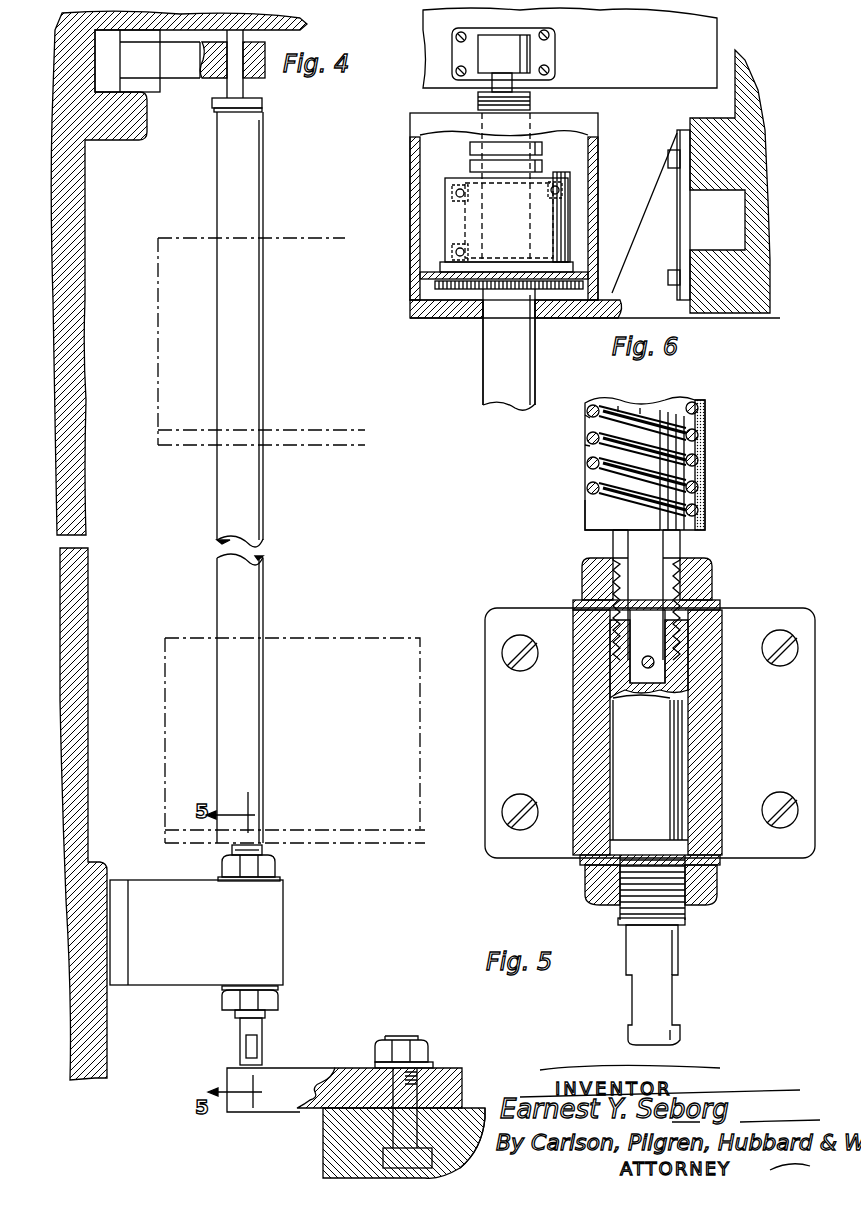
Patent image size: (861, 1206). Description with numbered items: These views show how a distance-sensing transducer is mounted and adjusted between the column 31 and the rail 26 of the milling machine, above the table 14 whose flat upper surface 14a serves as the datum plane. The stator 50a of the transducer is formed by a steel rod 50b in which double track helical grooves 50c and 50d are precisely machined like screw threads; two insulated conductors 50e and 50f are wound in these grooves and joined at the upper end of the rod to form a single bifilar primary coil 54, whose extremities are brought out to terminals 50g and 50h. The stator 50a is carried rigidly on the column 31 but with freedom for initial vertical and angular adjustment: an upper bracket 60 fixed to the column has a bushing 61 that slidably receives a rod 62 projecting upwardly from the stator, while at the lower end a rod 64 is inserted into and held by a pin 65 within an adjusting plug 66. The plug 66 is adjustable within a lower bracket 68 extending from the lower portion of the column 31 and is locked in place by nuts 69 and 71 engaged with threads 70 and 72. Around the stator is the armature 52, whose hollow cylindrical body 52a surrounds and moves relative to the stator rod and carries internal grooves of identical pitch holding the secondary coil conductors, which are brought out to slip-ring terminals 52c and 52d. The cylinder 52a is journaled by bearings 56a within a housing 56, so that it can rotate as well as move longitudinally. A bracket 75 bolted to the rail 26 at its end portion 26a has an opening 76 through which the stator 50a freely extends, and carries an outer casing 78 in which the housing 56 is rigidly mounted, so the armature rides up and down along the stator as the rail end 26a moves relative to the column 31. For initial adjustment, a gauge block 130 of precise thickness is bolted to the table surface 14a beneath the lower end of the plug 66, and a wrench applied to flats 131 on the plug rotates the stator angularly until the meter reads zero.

In FIG. 4, the table 14 is at (323, 1150).
In FIG. 4, the upper surface 14a is at (478, 1100).
In FIG. 6, the rail 26 is at (767, 143).
In FIG. 6, the end portion 26a is at (762, 190).
In FIG. 4, the column 31 is at (88, 548).
In FIG. 6, the column 31 is at (717, 38).
In FIG. 4, the stator 50a is at (269, 548).
In FIG. 6, the stator 50a is at (500, 365).
In FIG. 5, the stator 50a is at (707, 452).
In FIG. 5, the steel rod 50b is at (590, 512).
In FIG. 5, the helical groove 50c is at (618, 410).
In FIG. 5, the helical groove 50d is at (630, 440).
In FIG. 5, the insulated conductor 50e is at (585, 418).
In FIG. 5, the insulated conductor 50f is at (585, 445).
In FIG. 4, the terminal 50g is at (262, 103).
In FIG. 4, the terminal 50h is at (264, 116).
In FIG. 4, the armature 52 is at (158, 386).
In FIG. 6, the armature 52 is at (410, 234).
In FIG. 6, the hollow cylindrical body 52a is at (562, 175).
In FIG. 6, the terminal 52c is at (472, 137).
In FIG. 6, the terminal 52d is at (470, 165).
In FIG. 5, the bifilar primary coil 54 is at (697, 483).
In FIG. 6, the housing 56 is at (445, 212).
In FIG. 6, the bearings 56a is at (468, 196).
In FIG. 4, the upper bracket 60 is at (178, 78).
In FIG. 6, the upper bracket 60 is at (556, 52).
In FIG. 4, the bushing 61 is at (209, 78).
In FIG. 4, the rod 62 is at (250, 55).
In FIG. 5, the rod 64 is at (614, 544).
In FIG. 5, the pin 65 is at (645, 668).
In FIG. 5, the adjusting plug 66 is at (680, 716).
In FIG. 4, the lower bracket 68 is at (283, 938).
In FIG. 5, the lower bracket 68 is at (722, 741).
In FIG. 4, the nut 69 is at (279, 1000).
In FIG. 5, the nut 69 is at (592, 890).
In FIG. 4, the threads 70 is at (265, 1014).
In FIG. 5, the threads 70 is at (630, 905).
In FIG. 4, the nut 71 is at (276, 866).
In FIG. 5, the nut 71 is at (713, 578).
In FIG. 4, the threads 72 is at (263, 850).
In FIG. 5, the threads 72 is at (681, 556).
In FIG. 6, the bracket 75 is at (606, 318).
In FIG. 6, the opening 76 is at (484, 310).
In FIG. 6, the outer casing 78 is at (420, 277).
In FIG. 4, the gauge block 130 is at (335, 1068).
In FIG. 4, the flats 131 is at (248, 1046).
In FIG. 5, the flats 131 is at (632, 1000).